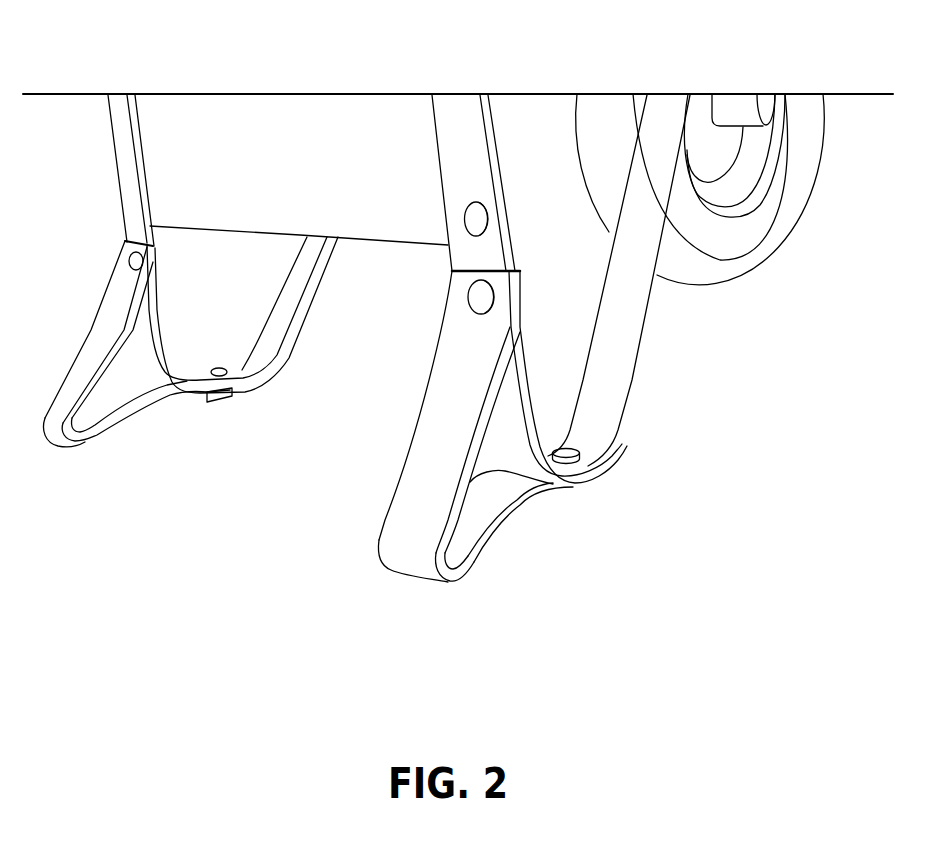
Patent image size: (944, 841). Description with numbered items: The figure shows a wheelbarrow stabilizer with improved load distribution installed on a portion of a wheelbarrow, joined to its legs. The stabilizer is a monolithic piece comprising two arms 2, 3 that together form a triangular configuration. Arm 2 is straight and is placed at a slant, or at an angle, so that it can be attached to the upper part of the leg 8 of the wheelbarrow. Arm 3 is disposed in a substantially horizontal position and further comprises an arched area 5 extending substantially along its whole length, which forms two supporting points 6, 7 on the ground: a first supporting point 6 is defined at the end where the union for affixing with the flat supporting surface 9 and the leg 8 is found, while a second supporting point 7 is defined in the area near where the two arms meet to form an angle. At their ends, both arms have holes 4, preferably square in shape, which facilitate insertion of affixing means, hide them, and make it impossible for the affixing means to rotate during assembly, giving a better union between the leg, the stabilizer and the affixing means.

The arm 2 is at (462, 428).
The arm 3 is at (478, 498).
The holes 4 is at (479, 295).
The arched area 5 is at (507, 518).
The first supporting point 6 is at (570, 483).
The second supporting point 7 is at (418, 576).
The leg 8 is at (463, 142).
The flat supporting surface 9 is at (585, 463).